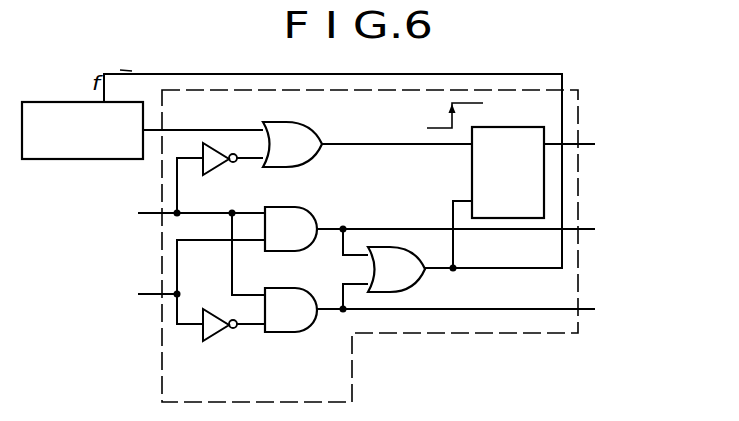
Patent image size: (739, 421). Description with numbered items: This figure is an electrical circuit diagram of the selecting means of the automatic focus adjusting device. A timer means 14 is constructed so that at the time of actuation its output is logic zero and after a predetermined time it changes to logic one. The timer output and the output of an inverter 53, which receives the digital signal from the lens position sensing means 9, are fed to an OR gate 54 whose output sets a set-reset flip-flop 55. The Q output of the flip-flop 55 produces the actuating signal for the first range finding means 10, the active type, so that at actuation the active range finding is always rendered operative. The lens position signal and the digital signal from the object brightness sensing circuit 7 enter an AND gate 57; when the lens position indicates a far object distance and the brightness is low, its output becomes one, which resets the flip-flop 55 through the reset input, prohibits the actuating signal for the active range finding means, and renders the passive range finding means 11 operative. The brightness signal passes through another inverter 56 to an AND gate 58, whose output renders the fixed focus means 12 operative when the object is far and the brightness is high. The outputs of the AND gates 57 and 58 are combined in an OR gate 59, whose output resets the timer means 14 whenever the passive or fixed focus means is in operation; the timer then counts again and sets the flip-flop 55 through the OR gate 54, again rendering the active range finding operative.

The timer means 14 is at (53, 101).
The lens position sensing means 9 is at (95, 198).
The object brightness sensing circuit 7 is at (95, 272).
The inverter 53 is at (217, 165).
The OR gate 54 is at (300, 122).
The set-reset flip-flop 55 is at (507, 127).
The inverter 56 is at (213, 309).
The AND gate 57 is at (290, 207).
The AND gate 58 is at (290, 288).
The OR gate 59 is at (405, 248).
The first range finding means 10 is at (624, 127).
The passive range finding means 11 is at (630, 212).
The fixed focus means 12 is at (628, 298).